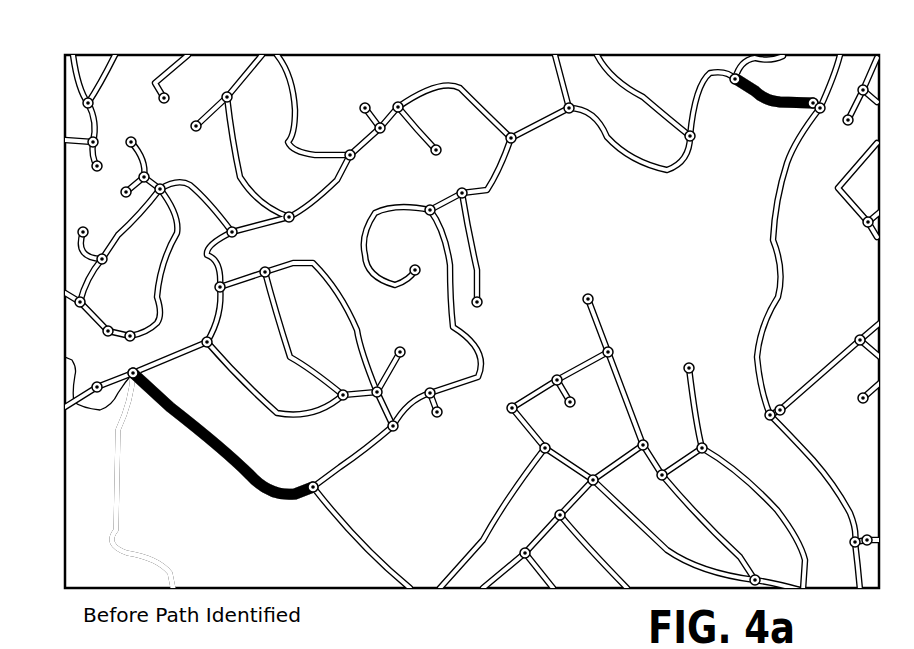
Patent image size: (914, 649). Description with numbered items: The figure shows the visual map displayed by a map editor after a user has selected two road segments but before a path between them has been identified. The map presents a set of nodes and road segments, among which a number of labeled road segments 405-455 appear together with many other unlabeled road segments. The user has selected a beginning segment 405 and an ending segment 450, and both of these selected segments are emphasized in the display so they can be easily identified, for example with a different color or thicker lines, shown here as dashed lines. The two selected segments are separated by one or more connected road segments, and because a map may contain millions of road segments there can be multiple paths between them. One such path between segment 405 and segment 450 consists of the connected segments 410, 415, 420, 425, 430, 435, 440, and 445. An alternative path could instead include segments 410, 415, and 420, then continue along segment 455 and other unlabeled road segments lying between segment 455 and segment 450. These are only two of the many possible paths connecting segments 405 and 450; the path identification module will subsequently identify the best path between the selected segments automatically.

The beginning segment 405 is at (767, 93).
The road segment 410 is at (693, 90).
The road segment 415 is at (636, 160).
The road segment 420 is at (530, 130).
The road segment 425 is at (495, 185).
The road segment 430 is at (465, 228).
The road segment 435 is at (453, 323).
The road segment 440 is at (415, 405).
The road segment 445 is at (353, 467).
The ending segment 450 is at (65, 357).
The road segment 455 is at (481, 113).